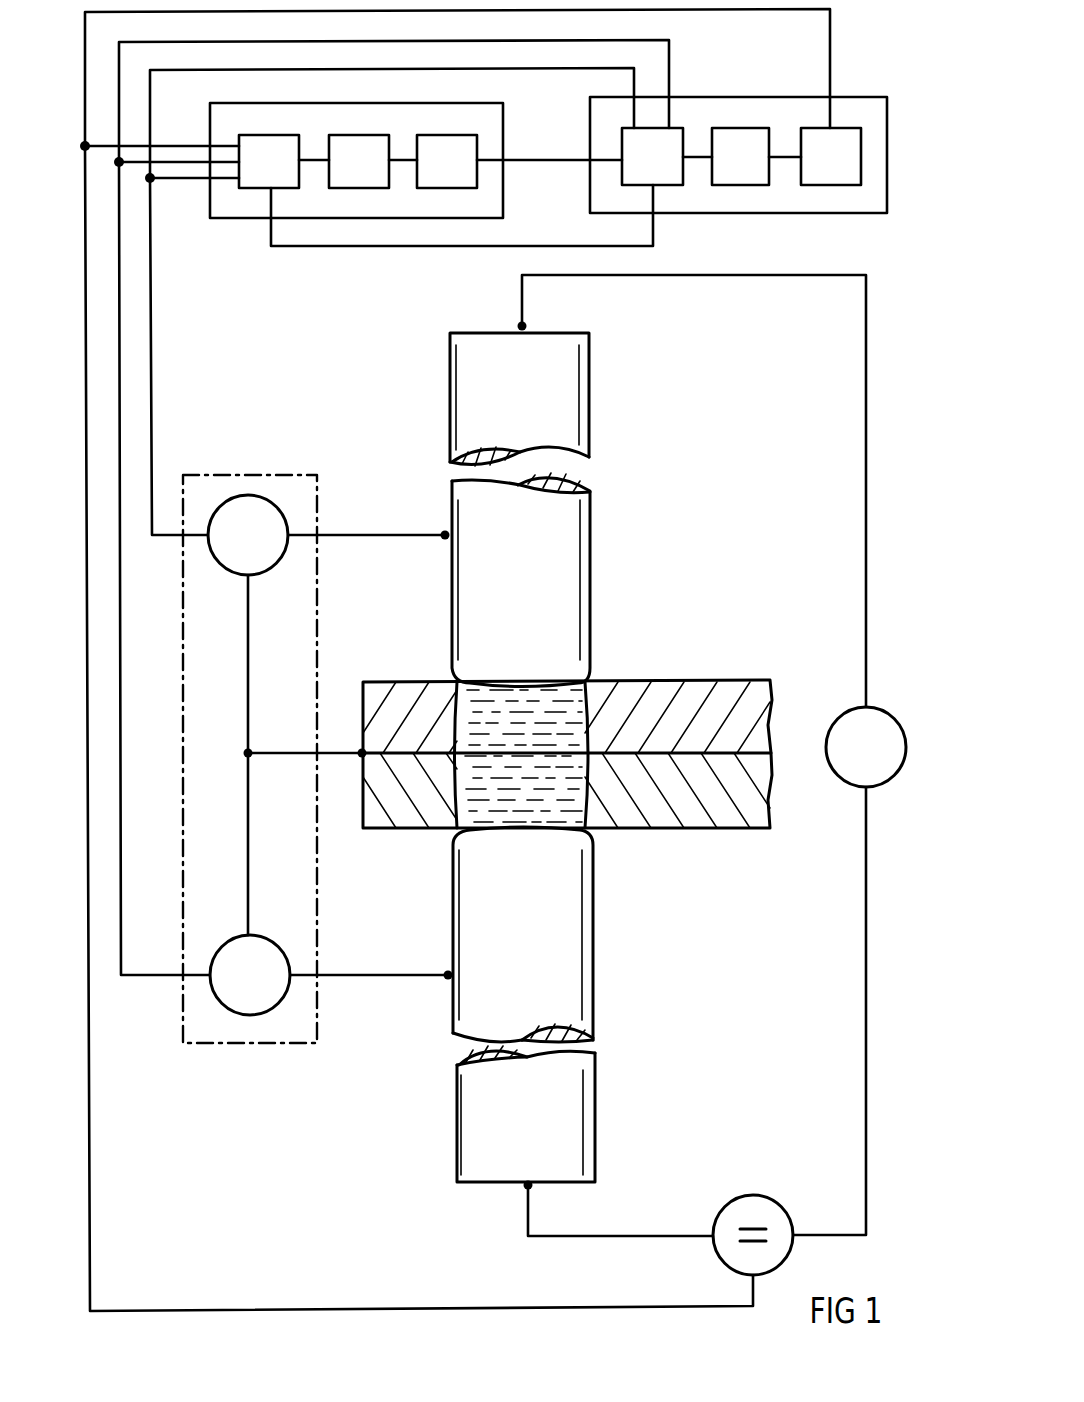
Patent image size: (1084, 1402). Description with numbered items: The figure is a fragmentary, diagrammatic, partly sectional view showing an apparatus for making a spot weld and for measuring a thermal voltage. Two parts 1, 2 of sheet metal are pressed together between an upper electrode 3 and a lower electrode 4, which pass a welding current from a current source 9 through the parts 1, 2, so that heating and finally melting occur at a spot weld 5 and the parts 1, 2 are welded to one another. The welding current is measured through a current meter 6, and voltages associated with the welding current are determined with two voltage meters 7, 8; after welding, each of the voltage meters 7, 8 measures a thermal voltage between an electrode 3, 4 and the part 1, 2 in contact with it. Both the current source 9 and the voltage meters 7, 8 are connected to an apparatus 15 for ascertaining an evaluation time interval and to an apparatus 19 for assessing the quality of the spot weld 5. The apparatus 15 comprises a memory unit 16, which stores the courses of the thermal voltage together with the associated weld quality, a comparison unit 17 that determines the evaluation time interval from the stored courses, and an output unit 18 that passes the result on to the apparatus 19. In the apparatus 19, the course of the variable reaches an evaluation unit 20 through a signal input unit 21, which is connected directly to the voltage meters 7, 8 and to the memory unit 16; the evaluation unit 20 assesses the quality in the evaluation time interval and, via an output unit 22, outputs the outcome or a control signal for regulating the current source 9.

The sheet metal part 1 is at (406, 690).
The sheet metal part 2 is at (402, 815).
The electrode 3 is at (562, 540).
The electrode 4 is at (572, 945).
The spot weld 5 is at (588, 705).
The current meter 6 is at (840, 716).
The voltage meter 7 is at (250, 1015).
The voltage meter 8 is at (248, 497).
The current source 9 is at (745, 1197).
The apparatus for ascertaining an evaluation time interval 15 is at (503, 119).
The memory unit 16 is at (255, 182).
The comparison unit 17 is at (355, 180).
The output unit 18 is at (470, 170).
The apparatus for assessing the quality of the spot weld 19 is at (749, 97).
The evaluation unit 20 is at (737, 175).
The signal input unit 21 is at (629, 171).
The output unit 22 is at (830, 175).